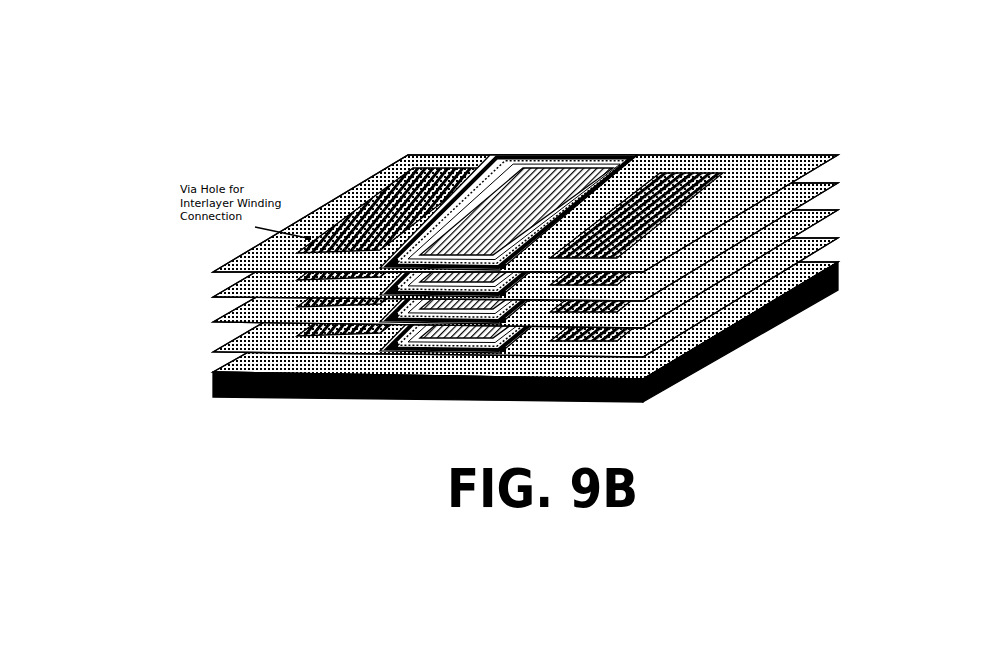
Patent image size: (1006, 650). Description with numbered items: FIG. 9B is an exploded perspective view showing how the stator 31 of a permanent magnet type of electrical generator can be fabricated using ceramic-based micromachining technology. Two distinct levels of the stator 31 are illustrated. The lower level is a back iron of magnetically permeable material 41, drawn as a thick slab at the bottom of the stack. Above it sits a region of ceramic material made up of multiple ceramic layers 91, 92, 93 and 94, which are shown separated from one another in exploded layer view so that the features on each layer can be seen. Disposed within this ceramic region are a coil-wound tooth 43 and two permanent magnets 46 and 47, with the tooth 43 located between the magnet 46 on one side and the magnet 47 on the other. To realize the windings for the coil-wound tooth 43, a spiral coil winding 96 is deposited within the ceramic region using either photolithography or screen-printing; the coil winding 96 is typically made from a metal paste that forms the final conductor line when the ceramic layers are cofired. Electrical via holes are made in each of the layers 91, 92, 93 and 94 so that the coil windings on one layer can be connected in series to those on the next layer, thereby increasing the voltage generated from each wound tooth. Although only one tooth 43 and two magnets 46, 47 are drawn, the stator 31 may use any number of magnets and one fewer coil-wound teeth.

The stator 31 is at (589, 238).
The back iron of magnetically permeable material 41 is at (483, 412).
The coil-wound tooth 43 is at (545, 193).
The permanent magnet 46 is at (442, 172).
The permanent magnet 47 is at (690, 172).
The spiral coil winding 96 is at (515, 152).
The ceramic layer 91 is at (569, 153).
The ceramic layer 92 is at (842, 173).
The ceramic layer 93 is at (843, 200).
The ceramic layer 94 is at (843, 228).